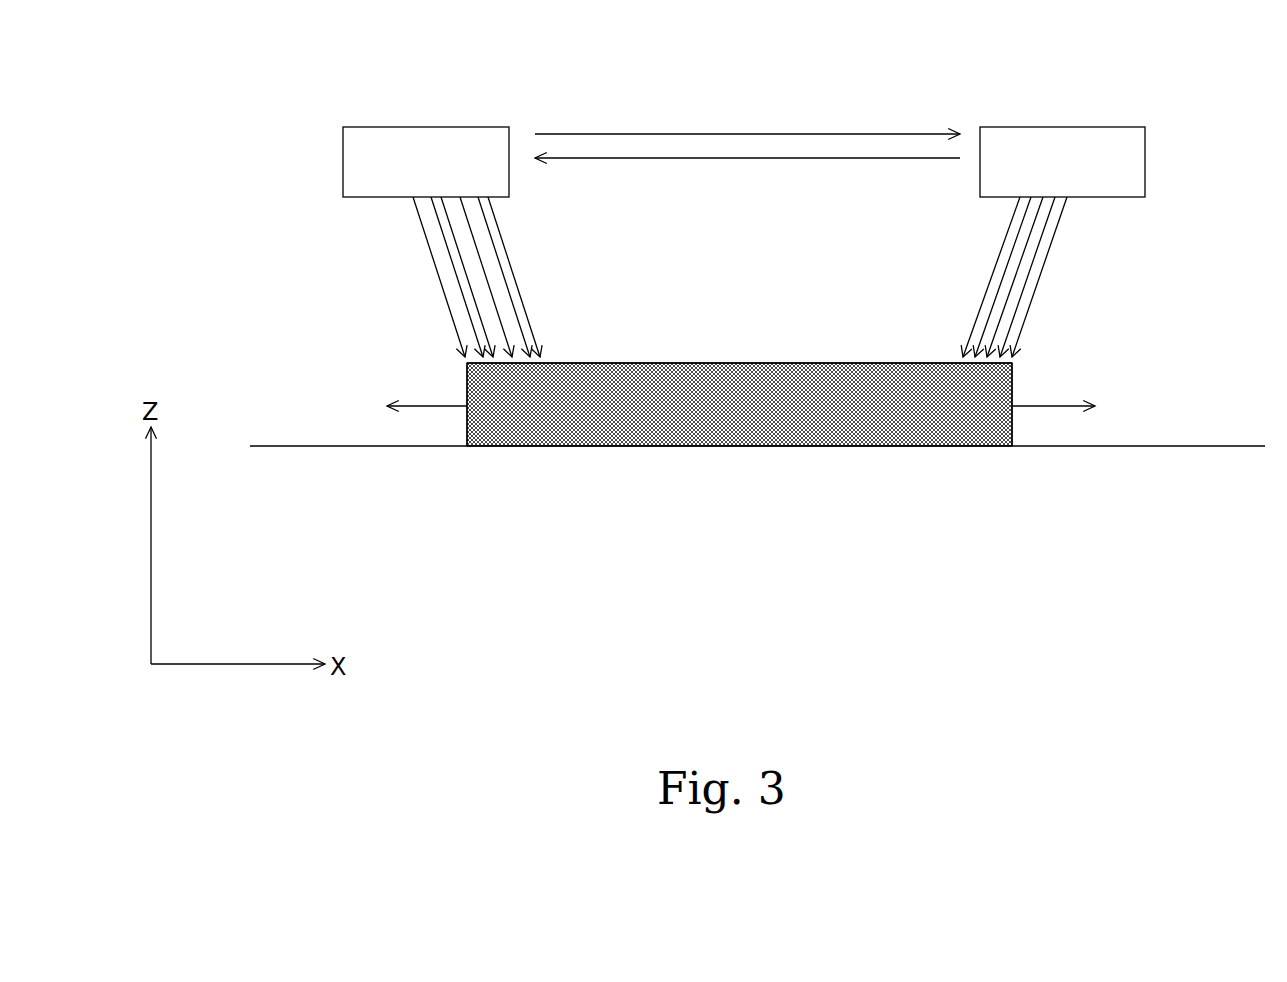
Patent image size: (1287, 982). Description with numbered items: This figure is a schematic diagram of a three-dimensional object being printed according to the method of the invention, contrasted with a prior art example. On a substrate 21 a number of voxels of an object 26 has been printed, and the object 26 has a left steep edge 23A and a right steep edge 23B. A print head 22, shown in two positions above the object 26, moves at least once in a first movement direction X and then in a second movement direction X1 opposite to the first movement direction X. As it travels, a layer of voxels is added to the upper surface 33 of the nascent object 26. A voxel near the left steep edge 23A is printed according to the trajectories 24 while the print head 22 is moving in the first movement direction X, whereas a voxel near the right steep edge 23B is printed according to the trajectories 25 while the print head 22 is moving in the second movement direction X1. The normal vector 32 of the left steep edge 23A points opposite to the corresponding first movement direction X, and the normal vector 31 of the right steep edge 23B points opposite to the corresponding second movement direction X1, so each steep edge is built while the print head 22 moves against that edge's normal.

The substrate 21 is at (282, 446).
The print head 22 is at (368, 155).
The left steep edge 23A is at (467, 426).
The right steep edge 23B is at (1012, 430).
The trajectories 24 is at (443, 297).
The trajectories 25 is at (1040, 288).
The object 26 is at (733, 377).
The normal vector 31 is at (1067, 406).
The normal vector 32 is at (430, 405).
The upper surface 33 is at (883, 362).
The first movement direction X is at (712, 134).
The second movement direction X1 is at (628, 158).